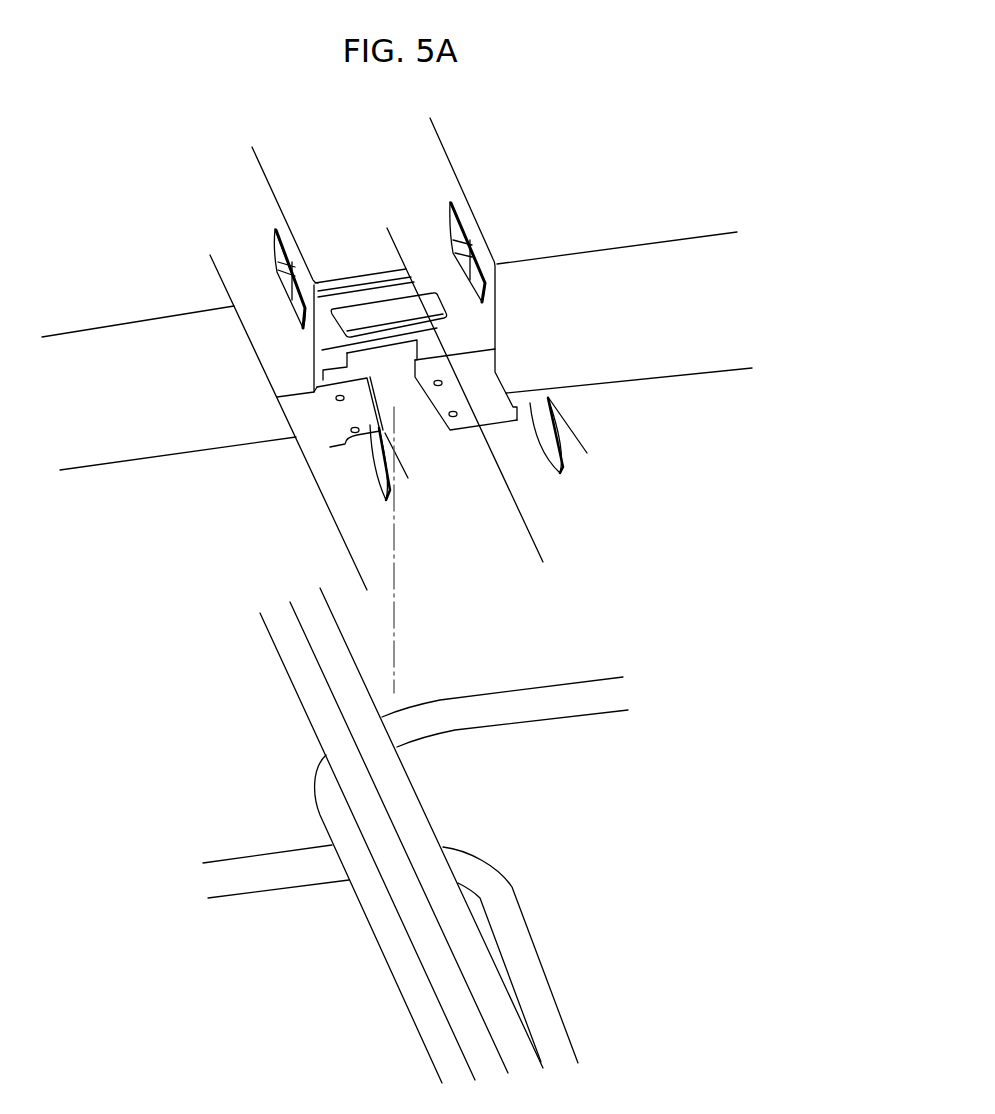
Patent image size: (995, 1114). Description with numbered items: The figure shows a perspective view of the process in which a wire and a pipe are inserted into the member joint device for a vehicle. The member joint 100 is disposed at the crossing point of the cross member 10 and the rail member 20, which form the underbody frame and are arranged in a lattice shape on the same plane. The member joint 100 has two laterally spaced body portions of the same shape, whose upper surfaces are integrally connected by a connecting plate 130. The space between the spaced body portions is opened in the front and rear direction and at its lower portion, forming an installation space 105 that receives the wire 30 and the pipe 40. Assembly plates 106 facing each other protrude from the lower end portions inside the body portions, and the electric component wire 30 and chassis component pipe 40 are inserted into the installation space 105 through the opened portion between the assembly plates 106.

The cross member 10 is at (88, 350).
The rail member 20 is at (232, 277).
The wire 30 is at (492, 895).
The pipe 40 is at (400, 797).
The member joint 100 is at (363, 314).
The installation space 105 is at (377, 372).
The assembly plate 106 is at (347, 418).
The connecting plate 130 is at (333, 287).